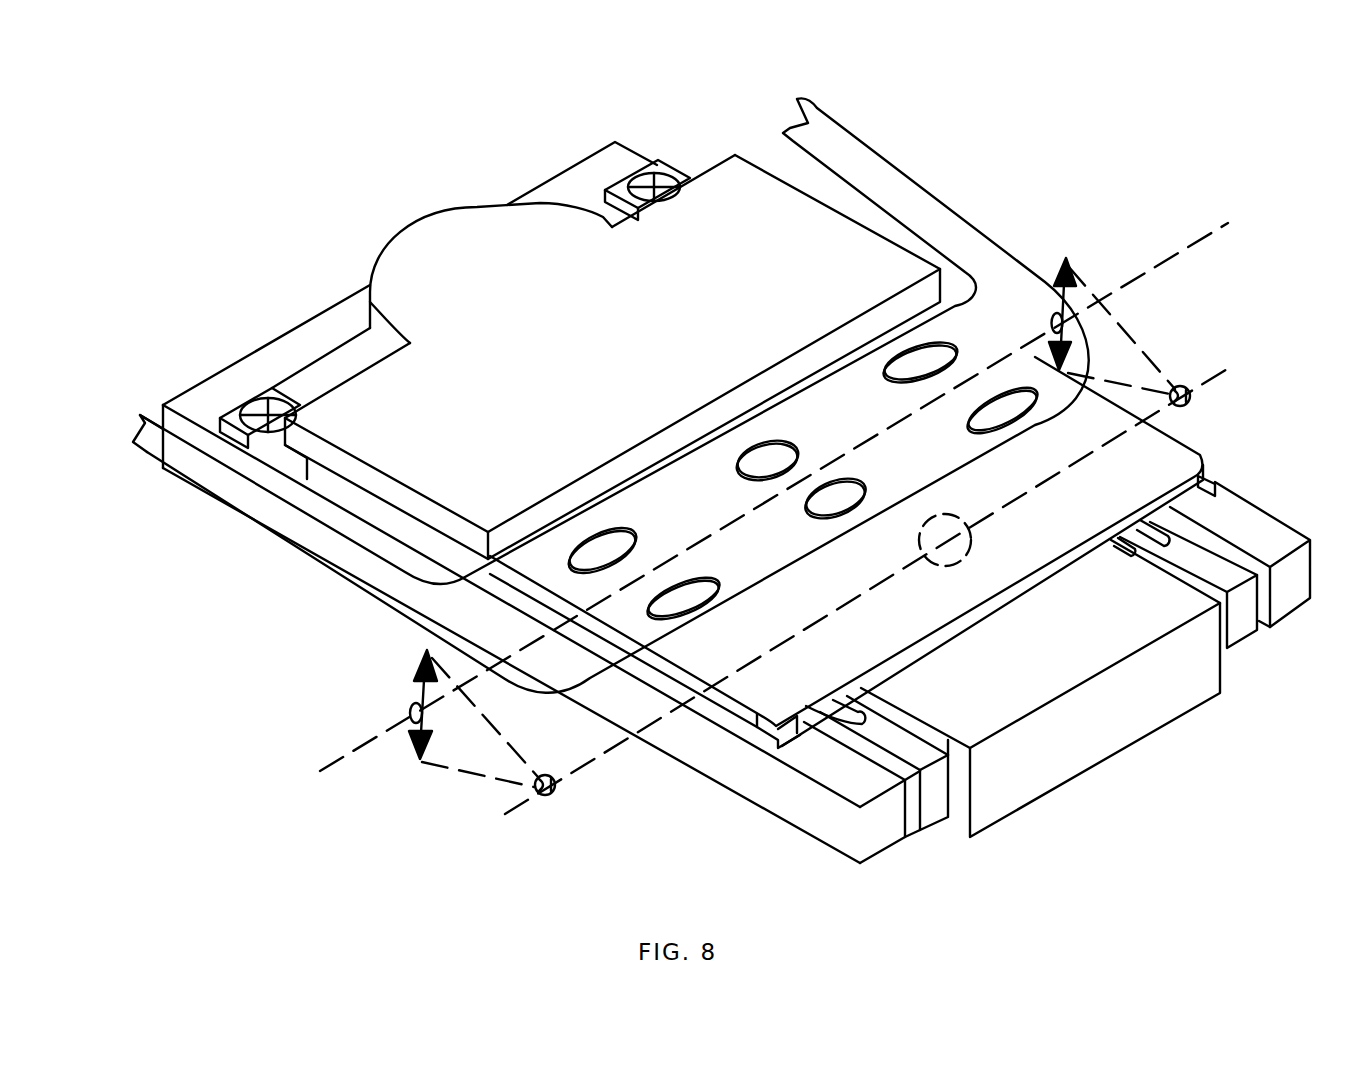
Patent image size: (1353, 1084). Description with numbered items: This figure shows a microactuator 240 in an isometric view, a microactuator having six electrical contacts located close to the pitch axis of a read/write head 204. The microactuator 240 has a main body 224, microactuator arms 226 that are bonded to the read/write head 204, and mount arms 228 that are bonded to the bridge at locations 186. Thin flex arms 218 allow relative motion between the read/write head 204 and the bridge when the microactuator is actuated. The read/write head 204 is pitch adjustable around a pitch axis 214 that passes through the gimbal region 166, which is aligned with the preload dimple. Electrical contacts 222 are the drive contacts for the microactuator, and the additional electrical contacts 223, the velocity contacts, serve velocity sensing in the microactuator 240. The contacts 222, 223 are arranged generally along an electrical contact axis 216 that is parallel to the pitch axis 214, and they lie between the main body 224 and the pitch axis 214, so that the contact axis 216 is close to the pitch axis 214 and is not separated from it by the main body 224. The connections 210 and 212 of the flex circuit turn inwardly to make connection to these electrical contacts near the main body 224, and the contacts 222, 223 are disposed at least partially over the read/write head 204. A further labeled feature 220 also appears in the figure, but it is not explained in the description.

The microactuator 240 is at (302, 217).
The connection 212 is at (847, 132).
The electrical contacts 222 is at (599, 548).
The electrical contact axis 216 is at (1193, 243).
The bonding locations 186 is at (1155, 449).
The mount arms 228 is at (887, 827).
The thin flex arms 218 is at (1148, 518).
The gimbal region 166 is at (972, 540).
The microactuator arms 226 is at (933, 800).
The pitch axis 214 is at (883, 580).
The read/write head 204 is at (1094, 754).
The main body 224 is at (569, 371).
The velocity contacts 223 is at (705, 596).
The connection 210 is at (335, 573).
The second pivot rotation 220 is at (420, 700).